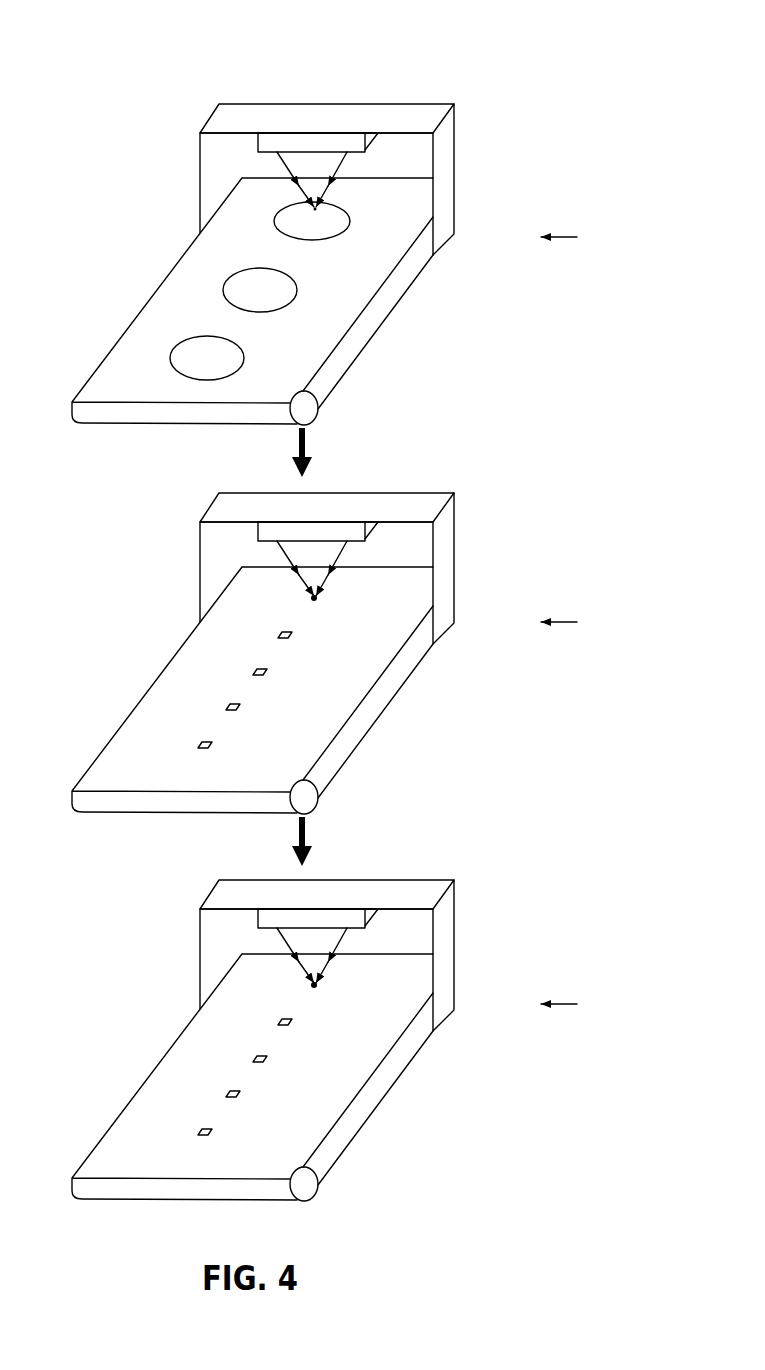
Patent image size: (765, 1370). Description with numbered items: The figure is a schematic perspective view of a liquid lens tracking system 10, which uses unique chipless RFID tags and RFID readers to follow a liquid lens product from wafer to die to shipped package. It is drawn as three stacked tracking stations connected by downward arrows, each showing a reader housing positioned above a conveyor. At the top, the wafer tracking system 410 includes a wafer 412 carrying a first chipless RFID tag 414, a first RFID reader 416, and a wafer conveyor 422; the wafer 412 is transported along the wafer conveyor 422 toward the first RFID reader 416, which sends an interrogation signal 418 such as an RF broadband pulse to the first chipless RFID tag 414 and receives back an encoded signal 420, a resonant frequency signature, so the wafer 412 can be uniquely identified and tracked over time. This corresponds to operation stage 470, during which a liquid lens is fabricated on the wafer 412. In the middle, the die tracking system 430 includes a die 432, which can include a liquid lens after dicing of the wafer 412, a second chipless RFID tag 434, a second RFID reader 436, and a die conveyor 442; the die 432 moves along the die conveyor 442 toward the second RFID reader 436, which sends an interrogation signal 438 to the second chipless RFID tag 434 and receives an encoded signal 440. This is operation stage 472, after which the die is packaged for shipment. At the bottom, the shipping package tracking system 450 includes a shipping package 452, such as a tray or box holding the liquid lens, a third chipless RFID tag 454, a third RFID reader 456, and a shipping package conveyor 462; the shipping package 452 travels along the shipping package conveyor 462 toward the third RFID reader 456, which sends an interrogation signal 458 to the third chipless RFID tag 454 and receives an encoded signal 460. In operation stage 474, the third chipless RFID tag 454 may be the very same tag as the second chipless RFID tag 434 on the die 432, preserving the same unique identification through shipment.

The liquid lens tracking system 10 is at (534, 48).
The wafer tracking system 410 is at (467, 166).
The wafer 412 is at (287, 218).
The first chipless RFID tag 414 is at (324, 211).
The first RFID reader 416 is at (270, 141).
The interrogation signal 418 is at (340, 172).
The encoded signal 420 is at (280, 167).
The wafer conveyor 422 is at (121, 352).
The die tracking system 430 is at (360, 568).
The die 432 is at (253, 673).
The second chipless RFID tag 434 is at (353, 584).
The second RFID reader 436 is at (249, 538).
The interrogation signal 438 is at (385, 542).
The encoded signal 440 is at (235, 571).
The die conveyor 442 is at (252, 690).
The shipping package tracking system 450 is at (360, 955).
The shipping package 452 is at (253, 1060).
The third chipless RFID tag 454 is at (353, 972).
The third RFID reader 456 is at (249, 925).
The interrogation signal 458 is at (385, 928).
The encoded signal 460 is at (235, 958).
The shipping package conveyor 462 is at (252, 1077).
The operation stage 470 is at (582, 241).
The operation stage 472 is at (582, 625).
The operation stage 474 is at (582, 1006).